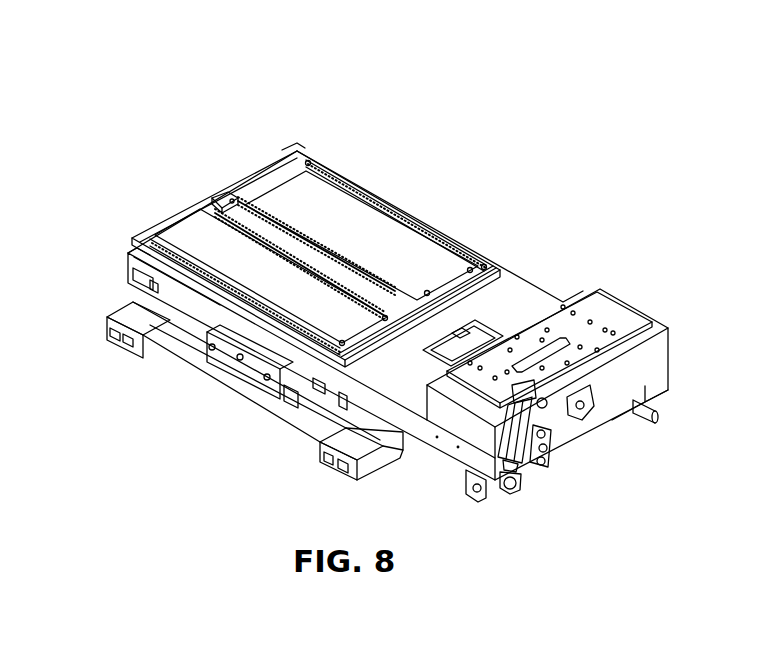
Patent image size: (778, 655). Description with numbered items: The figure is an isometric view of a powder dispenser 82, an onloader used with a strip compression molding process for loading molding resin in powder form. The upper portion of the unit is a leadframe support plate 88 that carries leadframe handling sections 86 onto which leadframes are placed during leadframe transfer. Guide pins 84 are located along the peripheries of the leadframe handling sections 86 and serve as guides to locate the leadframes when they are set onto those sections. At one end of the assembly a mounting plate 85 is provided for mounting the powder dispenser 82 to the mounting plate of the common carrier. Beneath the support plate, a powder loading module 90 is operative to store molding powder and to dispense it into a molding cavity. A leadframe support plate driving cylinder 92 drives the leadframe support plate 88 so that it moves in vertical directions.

The powder dispenser 82 is at (607, 73).
The guide pins 84 is at (279, 157).
The mounting plate 85 is at (586, 305).
The leadframe handling sections 86 is at (304, 201).
The leadframe support plate 88 is at (206, 192).
The powder loading module 90 is at (311, 402).
The leadframe support plate driving cylinder 92 is at (540, 440).